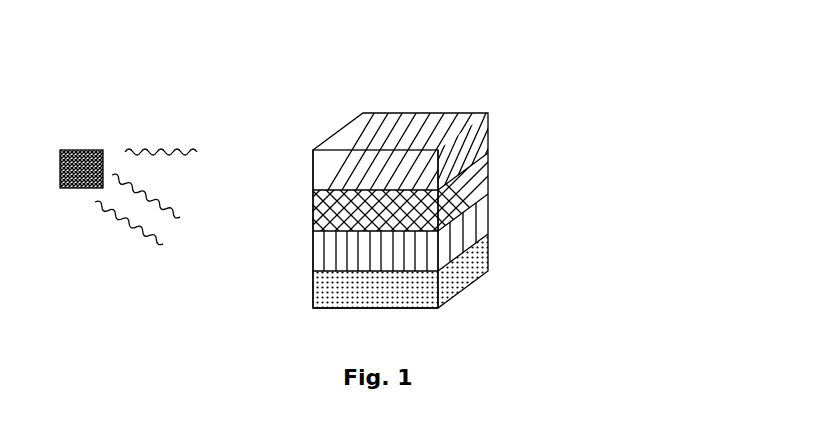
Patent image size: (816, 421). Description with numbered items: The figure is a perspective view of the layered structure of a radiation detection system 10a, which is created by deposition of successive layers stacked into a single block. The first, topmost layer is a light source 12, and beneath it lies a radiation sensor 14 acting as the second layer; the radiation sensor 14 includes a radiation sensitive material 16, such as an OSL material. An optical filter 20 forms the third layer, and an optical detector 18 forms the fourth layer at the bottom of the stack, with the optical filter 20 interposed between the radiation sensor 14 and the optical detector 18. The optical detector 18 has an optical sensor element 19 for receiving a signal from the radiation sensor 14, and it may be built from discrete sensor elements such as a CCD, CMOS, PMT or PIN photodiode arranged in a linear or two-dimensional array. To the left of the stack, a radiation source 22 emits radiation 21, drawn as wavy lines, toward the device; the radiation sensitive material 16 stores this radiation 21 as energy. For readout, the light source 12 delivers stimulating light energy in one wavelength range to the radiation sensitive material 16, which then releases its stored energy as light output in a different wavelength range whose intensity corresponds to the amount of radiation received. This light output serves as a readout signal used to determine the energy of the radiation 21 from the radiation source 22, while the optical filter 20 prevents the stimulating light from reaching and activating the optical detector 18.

The radiation detection system 10a is at (567, 103).
The light source 12 is at (490, 128).
The radiation sensor 14 is at (490, 172).
The radiation sensitive material 16 is at (310, 200).
The optical detector 18 is at (492, 258).
The optical sensor element 19 is at (312, 285).
The optical filter 20 is at (492, 215).
The radiation 21 is at (202, 150).
The radiation source 22 is at (73, 150).